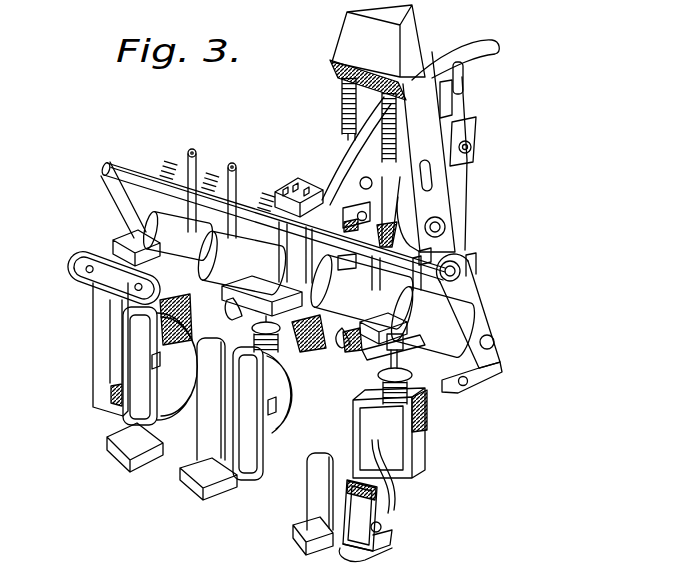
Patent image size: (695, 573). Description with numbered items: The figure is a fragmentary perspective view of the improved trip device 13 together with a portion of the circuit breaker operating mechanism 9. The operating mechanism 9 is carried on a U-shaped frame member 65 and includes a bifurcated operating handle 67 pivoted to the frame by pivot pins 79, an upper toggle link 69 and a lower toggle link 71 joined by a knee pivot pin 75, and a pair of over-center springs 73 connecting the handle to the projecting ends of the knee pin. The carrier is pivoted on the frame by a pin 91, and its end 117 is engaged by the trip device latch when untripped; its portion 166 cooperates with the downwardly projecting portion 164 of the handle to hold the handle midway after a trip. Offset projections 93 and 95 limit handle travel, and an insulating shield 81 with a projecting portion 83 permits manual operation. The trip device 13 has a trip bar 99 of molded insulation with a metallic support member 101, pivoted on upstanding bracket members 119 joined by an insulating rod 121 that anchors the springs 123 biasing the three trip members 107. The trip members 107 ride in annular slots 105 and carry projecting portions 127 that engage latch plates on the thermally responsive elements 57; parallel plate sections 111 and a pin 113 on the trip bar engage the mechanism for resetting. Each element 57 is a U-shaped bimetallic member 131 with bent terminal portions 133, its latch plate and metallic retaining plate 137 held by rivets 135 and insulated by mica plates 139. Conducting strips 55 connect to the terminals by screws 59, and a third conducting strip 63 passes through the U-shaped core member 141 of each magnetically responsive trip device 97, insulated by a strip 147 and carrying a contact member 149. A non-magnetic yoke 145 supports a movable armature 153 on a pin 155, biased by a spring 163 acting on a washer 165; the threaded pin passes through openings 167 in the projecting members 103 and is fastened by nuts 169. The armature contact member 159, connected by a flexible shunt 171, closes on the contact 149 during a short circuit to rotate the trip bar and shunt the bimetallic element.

The circuit breaker operating mechanism 9 is at (491, 99).
The trip device 13 is at (72, 202).
The conducting strips 55 is at (178, 480).
The thermally responsive elements 57 is at (327, 485).
The screw 59 is at (100, 410).
The third conducting strip 63 is at (355, 381).
The U shaped frame member 65 is at (468, 213).
The bifurcated operating handle 67 is at (425, 118).
The upper toggle link 69 is at (388, 140).
The lower toggle link 71 is at (320, 164).
The over-center springs 73 is at (340, 110).
The knee pivot pin 75 is at (398, 158).
The pivot pins 79 is at (446, 228).
The insulating shield 81 is at (487, 42).
The projecting portion 83 is at (355, 28).
The pin 91 is at (472, 147).
The offset projection 93 is at (405, 243).
The offset projection 95 is at (478, 130).
The magnetically responsive trip device 97 is at (448, 422).
The trip bar 99 is at (362, 295).
The metallic support member 101 is at (495, 338).
The outwardly projecting members 103 is at (324, 320).
The annular slots 105 is at (420, 314).
The trip members 107 is at (120, 238).
The plate sections 111 is at (350, 246).
The pin 113 is at (432, 198).
The end of the carrier 117 is at (300, 188).
The upstanding bracket members 119 is at (118, 198).
The insulating rod 121 is at (430, 268).
The springs 123 is at (188, 150).
The projecting portion 127 is at (110, 250).
The bimetallic member 131 is at (100, 298).
The terminal portions 133 is at (110, 432).
The rivets 135 is at (86, 270).
The metallic retaining plate 137 is at (90, 283).
The mica plates 139 is at (78, 260).
The U-shaped core member 141 is at (158, 380).
The yoke 145 is at (453, 458).
The strip of insulating material 147 is at (440, 478).
The contact member 149 is at (453, 445).
The movable armature 153 is at (185, 322).
The pin 155 is at (314, 310).
The contact member 159 is at (120, 330).
The spring 163 is at (505, 400).
The downwardly projecting portion 164 is at (465, 72).
The washer 165 is at (420, 378).
The portion of the carrier 166 is at (454, 88).
The openings 167 is at (380, 352).
The nuts 169 is at (392, 292).
The flexible shunt 171 is at (158, 358).